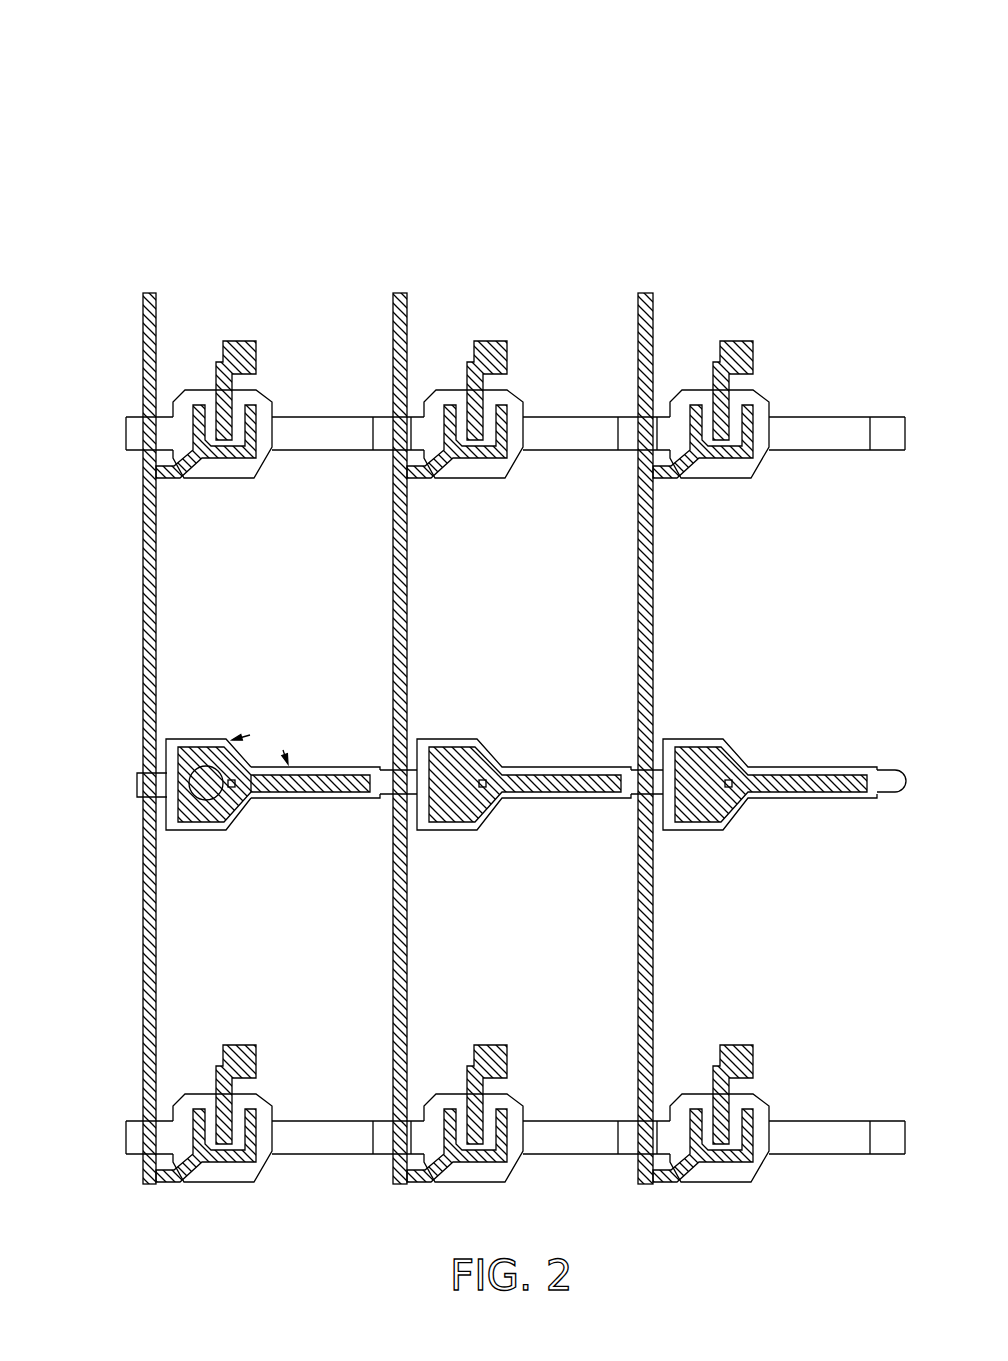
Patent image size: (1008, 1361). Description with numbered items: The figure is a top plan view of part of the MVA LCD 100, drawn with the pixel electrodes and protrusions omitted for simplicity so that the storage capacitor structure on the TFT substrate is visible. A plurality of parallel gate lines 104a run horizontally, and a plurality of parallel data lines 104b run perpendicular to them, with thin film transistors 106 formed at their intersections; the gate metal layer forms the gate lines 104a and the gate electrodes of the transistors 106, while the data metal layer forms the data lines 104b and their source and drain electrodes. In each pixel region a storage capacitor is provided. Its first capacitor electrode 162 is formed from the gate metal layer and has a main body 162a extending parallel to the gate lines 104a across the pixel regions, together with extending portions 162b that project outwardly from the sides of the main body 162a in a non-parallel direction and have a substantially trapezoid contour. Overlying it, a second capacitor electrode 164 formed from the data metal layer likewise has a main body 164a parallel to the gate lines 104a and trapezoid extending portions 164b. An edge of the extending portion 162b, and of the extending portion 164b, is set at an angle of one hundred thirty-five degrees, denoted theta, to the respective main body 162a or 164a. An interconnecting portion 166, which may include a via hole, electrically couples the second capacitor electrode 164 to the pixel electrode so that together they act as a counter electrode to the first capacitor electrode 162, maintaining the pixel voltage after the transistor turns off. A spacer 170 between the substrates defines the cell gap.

The MVA LCD 100 is at (127, 86).
The gate line 104a is at (128, 432).
The data line 104b is at (143, 313).
The thin film transistor 106 is at (266, 419).
The first capacitor electrode 162 is at (215, 745).
The main body of first capacitor electrode 162a is at (165, 779).
The extending portion of first capacitor electrode 162b is at (187, 745).
The second capacitor electrode 164 is at (362, 774).
The main body of second capacitor electrode 164a is at (312, 766).
The extending portion of second capacitor electrode 164b is at (200, 747).
The interconnecting portion 166 is at (232, 788).
The spacer 170 is at (188, 812).